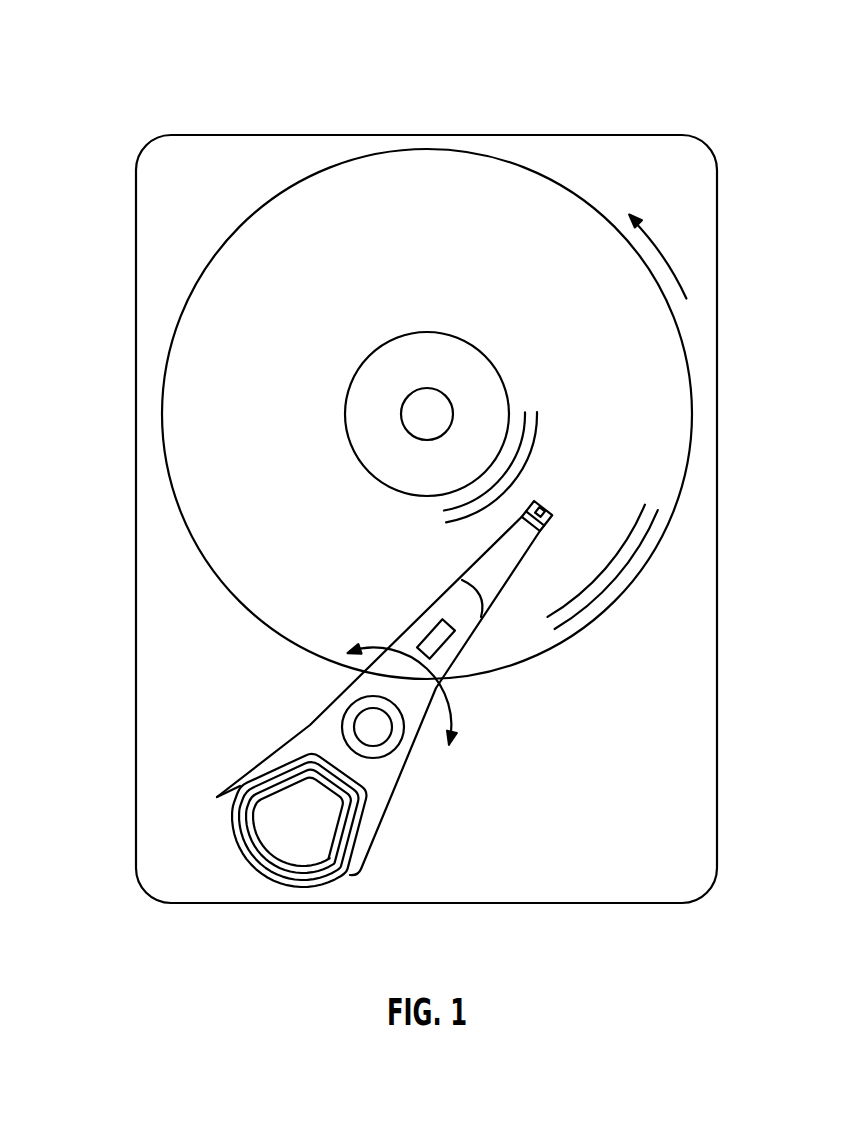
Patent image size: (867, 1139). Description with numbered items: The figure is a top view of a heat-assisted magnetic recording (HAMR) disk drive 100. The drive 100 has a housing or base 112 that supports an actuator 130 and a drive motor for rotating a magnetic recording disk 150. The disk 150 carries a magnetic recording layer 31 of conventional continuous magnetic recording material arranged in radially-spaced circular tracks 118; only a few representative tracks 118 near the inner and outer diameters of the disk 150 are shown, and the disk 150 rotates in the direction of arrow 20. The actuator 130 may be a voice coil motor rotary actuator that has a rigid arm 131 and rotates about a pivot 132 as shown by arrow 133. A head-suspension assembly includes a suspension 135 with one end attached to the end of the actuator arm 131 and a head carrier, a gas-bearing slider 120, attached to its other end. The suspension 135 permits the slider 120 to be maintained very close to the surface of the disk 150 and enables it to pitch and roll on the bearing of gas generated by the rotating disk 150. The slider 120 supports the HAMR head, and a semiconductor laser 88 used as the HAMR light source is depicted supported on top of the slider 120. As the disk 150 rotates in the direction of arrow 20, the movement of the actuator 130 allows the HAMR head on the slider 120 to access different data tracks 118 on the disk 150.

The HAMR disk drive 100 is at (135, 55).
The housing or base 112 is at (645, 134).
The disk 150 is at (287, 190).
The arrow 20 is at (657, 238).
The magnetic recording layer 31 is at (668, 378).
The tracks 118 is at (612, 497).
The semiconductor laser 88 is at (552, 512).
The gas-bearing slider 120 is at (547, 526).
The suspension 135 is at (466, 583).
The rigid arm 131 is at (412, 637).
The arrow 133 is at (450, 708).
The pivot 132 is at (356, 724).
The actuator 130 is at (230, 778).